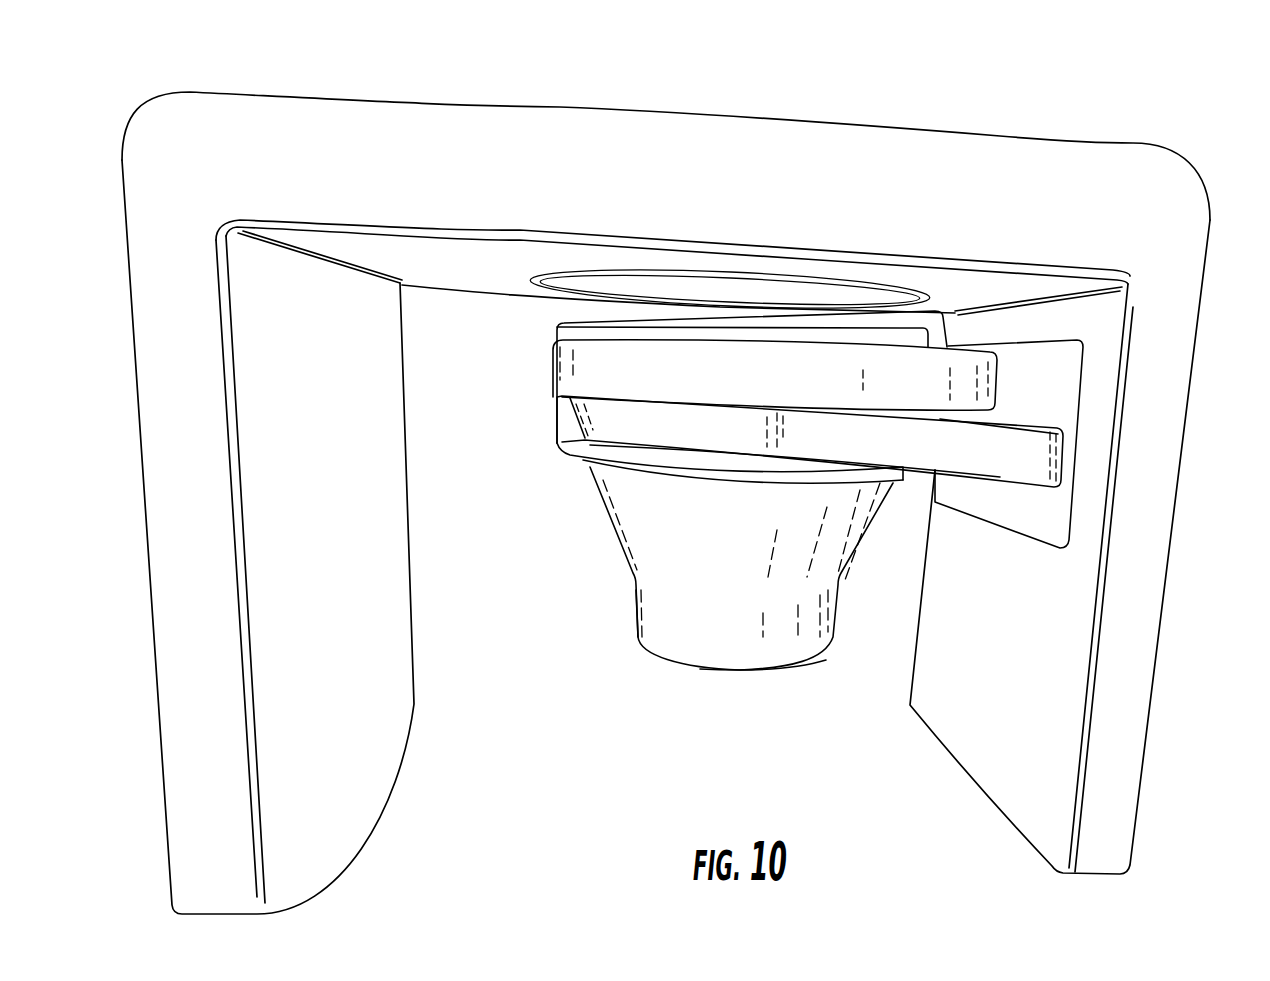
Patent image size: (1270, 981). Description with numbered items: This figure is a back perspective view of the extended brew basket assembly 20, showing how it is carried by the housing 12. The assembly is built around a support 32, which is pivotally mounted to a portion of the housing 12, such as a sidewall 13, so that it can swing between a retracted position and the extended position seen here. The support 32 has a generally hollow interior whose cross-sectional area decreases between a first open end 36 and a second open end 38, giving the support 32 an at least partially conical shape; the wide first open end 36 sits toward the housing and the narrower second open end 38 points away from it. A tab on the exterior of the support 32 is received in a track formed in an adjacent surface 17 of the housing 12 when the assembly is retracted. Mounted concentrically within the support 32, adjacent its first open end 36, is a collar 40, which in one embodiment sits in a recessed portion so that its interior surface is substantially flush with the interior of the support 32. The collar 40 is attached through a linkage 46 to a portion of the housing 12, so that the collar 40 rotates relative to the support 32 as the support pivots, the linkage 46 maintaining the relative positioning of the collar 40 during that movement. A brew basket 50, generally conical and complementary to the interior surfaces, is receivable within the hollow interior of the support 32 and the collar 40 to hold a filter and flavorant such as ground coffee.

The housing 12 is at (830, 160).
The sidewall 13 is at (1038, 628).
The adjacent surface 17 is at (297, 703).
The brew basket assembly 20 is at (620, 612).
The support 32 is at (632, 502).
The first open end 36 is at (905, 338).
The second open end 38 is at (810, 667).
The collar 40 is at (713, 425).
The linkage 46 is at (981, 451).
The brew basket 50 is at (640, 377).